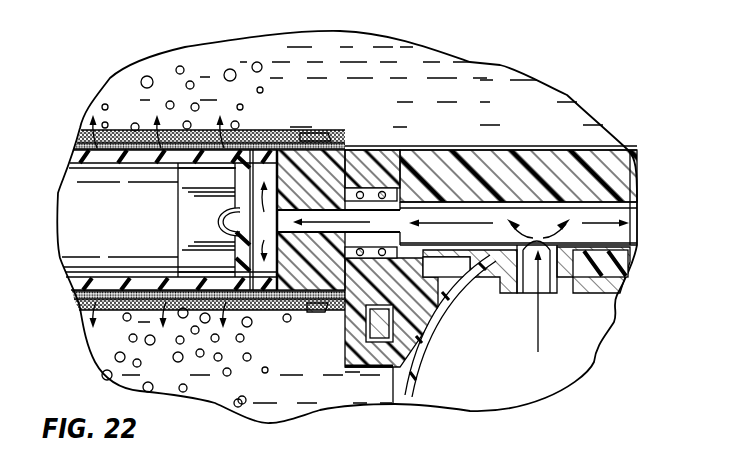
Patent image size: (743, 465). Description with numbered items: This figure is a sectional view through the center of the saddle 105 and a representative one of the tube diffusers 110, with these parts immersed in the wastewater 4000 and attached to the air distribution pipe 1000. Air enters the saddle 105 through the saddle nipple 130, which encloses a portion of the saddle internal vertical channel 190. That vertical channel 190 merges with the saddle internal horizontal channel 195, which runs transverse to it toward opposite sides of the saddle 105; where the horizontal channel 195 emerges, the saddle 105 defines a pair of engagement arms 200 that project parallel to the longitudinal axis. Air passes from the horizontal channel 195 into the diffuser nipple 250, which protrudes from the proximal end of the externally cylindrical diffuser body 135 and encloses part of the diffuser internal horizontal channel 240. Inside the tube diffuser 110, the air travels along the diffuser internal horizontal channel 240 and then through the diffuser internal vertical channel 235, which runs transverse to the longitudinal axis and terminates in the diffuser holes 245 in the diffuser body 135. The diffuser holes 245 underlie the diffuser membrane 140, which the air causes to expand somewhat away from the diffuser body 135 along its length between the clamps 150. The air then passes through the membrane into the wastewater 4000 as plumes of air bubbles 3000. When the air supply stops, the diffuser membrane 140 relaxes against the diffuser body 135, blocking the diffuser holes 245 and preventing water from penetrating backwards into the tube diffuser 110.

The air bubbles 3000 is at (160, 86).
The wastewater 4000 is at (490, 88).
The tube diffuser 110 is at (120, 121).
The saddle 105 is at (540, 140).
The saddle internal horizontal channel 195 is at (603, 218).
The diffuser internal horizontal channel 240 is at (418, 152).
The diffuser nipple 250 is at (378, 188).
The diffuser holes 245 is at (264, 156).
The diffuser body 135 is at (77, 208).
The engagement arms 200 is at (172, 250).
The diffuser membrane 140 is at (88, 357).
The diffuser internal vertical channel 235 is at (268, 303).
The clamps 150 is at (332, 322).
The saddle internal vertical channel 190 is at (523, 293).
The saddle nipple 130 is at (614, 318).
The air distribution pipe 1000 is at (410, 402).